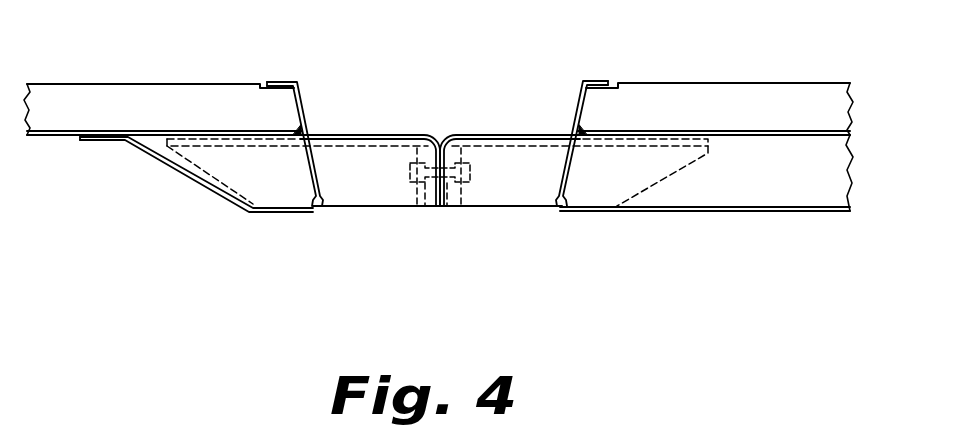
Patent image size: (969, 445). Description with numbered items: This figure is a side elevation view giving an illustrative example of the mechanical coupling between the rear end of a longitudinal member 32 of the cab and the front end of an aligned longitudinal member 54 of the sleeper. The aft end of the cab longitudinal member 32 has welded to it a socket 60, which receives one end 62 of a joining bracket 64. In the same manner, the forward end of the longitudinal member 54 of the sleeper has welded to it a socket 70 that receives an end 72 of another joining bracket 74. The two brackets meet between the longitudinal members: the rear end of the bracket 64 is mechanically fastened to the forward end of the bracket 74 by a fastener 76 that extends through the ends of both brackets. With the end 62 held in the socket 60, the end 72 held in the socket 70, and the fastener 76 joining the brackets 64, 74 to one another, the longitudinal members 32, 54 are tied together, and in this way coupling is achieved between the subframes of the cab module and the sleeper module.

The longitudinal member 32 is at (73, 84).
The longitudinal member 54 is at (758, 83).
The end of joining bracket 62 is at (233, 160).
The end of joining bracket 72 is at (636, 163).
The socket 60 is at (186, 174).
The joining bracket 64 is at (372, 207).
The joining bracket 74 is at (497, 207).
The fastener 76 is at (427, 206).
The socket 70 is at (722, 210).